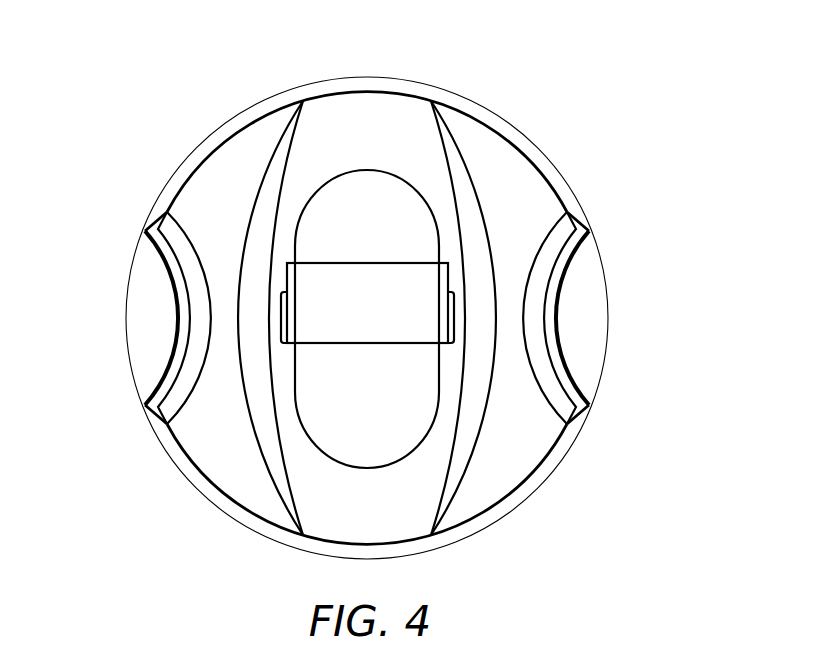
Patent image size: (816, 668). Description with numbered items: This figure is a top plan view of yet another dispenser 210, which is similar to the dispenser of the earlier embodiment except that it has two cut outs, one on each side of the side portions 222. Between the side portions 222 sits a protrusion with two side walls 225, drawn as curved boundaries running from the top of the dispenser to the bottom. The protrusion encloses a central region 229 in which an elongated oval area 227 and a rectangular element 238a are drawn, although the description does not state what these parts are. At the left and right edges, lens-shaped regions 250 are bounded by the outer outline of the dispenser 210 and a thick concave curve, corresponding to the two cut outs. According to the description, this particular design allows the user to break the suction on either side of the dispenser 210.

The dispenser 210 is at (552, 63).
The side portions 222 is at (512, 183).
The side walls 225 is at (259, 231).
The oval window 227 is at (392, 243).
The central panel 229 is at (395, 139).
The electronics module 238a is at (410, 322).
The grip region 250 is at (147, 341).